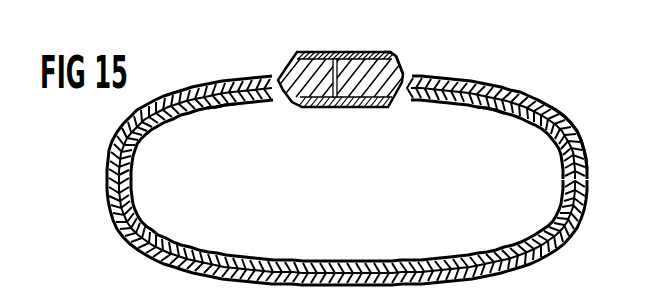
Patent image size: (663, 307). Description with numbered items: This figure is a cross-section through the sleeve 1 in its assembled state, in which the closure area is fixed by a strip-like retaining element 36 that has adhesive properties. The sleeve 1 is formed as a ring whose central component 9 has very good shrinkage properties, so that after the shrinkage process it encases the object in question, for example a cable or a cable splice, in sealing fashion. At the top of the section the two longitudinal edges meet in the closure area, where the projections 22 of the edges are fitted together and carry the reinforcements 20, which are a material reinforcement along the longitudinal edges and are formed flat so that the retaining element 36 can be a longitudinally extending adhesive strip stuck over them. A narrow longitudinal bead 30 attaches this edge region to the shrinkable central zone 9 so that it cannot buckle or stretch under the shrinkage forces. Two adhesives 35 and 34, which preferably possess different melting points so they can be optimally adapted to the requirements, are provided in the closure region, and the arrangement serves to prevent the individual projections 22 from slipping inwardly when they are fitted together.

The sleeve 1 is at (193, 82).
The central zone 9 is at (565, 132).
The reinforcements 20 is at (403, 63).
The projections 22 is at (366, 51).
The longitudinal bead 30 is at (315, 51).
The adhesive 34 is at (320, 107).
The adhesive 35 is at (222, 106).
The strip-like retaining element 36 is at (378, 52).